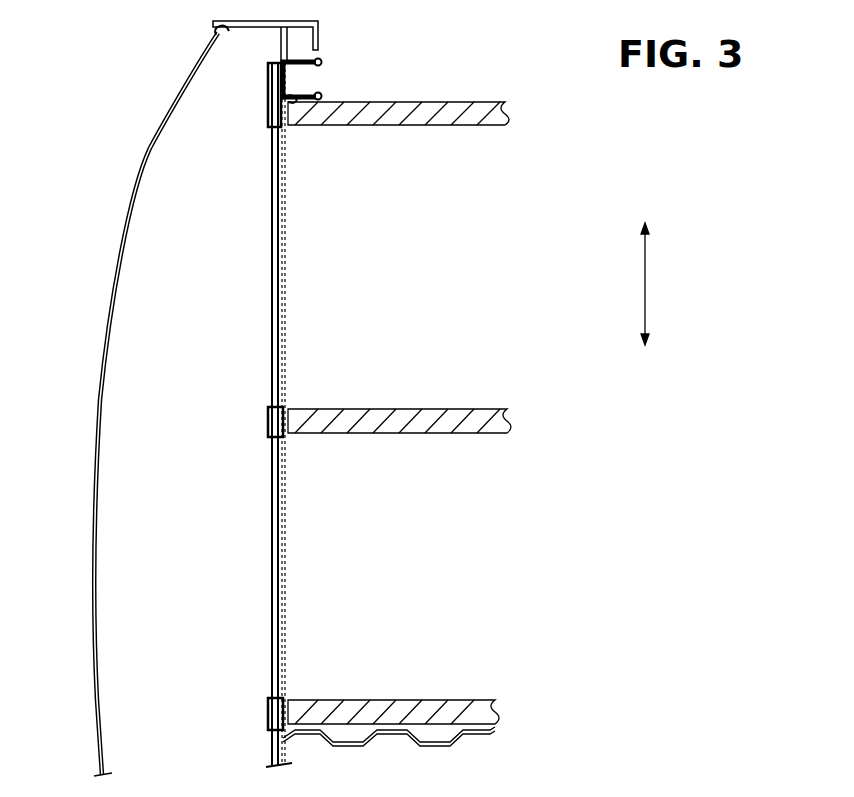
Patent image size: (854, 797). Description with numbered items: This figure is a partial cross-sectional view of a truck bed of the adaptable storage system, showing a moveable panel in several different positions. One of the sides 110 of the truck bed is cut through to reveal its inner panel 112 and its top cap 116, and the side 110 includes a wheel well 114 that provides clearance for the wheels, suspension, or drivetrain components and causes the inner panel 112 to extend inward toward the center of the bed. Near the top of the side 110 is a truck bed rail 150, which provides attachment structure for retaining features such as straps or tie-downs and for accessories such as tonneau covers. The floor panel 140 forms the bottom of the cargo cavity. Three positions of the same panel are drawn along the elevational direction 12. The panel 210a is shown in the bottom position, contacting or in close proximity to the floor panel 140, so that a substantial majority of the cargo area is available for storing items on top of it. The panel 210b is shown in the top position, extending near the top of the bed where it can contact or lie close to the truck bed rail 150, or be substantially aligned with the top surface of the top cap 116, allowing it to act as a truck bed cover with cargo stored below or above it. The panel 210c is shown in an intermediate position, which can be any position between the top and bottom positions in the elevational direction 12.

The elevational direction 12 is at (645, 282).
The sides 110 is at (177, 394).
The inner panel 112 is at (288, 318).
The wheel well 114 is at (108, 318).
The top cap 116 is at (228, 24).
The floor panel 140 is at (455, 748).
The truck bed rail 150 is at (321, 61).
The panel 210a is at (485, 712).
The panel 210b is at (468, 118).
The panel 210c is at (500, 420).